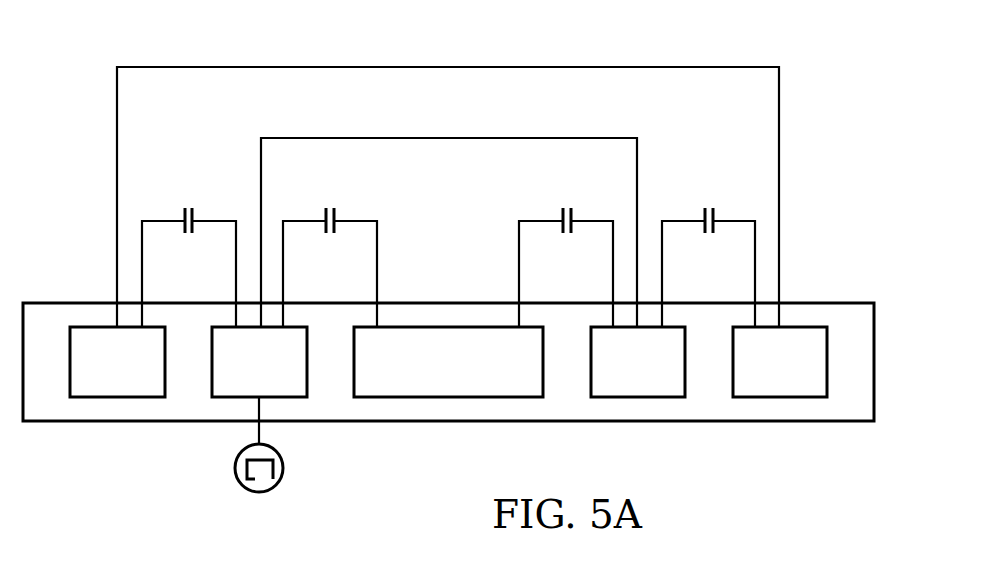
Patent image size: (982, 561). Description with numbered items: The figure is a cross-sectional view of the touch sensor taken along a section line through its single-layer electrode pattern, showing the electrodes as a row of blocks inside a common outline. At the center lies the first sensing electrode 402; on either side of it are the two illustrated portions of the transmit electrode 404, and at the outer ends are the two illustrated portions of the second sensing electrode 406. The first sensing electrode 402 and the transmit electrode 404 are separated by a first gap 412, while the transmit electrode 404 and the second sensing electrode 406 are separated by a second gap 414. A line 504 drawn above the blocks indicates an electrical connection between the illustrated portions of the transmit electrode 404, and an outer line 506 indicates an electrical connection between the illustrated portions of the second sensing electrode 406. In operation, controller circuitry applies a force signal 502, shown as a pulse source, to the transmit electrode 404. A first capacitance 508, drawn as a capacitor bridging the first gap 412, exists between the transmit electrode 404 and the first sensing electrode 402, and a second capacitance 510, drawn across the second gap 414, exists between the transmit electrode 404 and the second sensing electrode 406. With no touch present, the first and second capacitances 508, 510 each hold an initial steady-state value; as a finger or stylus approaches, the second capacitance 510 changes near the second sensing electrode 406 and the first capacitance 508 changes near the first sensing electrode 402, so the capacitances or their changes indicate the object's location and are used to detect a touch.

The first sensing electrode 402 is at (470, 379).
The transmit electrode 404 is at (282, 379).
The second sensing electrode 406 is at (141, 379).
The first gap 412 is at (332, 338).
The second gap 414 is at (190, 338).
The force signal 502 is at (235, 468).
The line indicating electrical connection of transmit electrode portions 504 is at (449, 137).
The line indicating electrical connection of second sensing electrode portions 506 is at (449, 66).
The first capacitance 508 is at (332, 208).
The second capacitance 510 is at (190, 208).